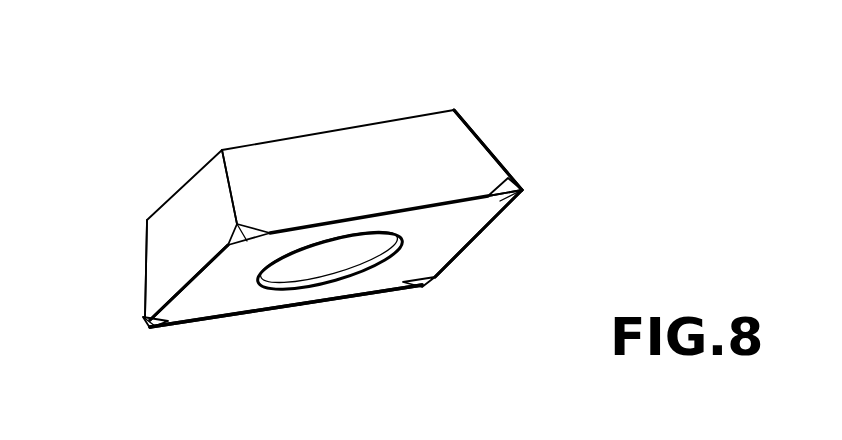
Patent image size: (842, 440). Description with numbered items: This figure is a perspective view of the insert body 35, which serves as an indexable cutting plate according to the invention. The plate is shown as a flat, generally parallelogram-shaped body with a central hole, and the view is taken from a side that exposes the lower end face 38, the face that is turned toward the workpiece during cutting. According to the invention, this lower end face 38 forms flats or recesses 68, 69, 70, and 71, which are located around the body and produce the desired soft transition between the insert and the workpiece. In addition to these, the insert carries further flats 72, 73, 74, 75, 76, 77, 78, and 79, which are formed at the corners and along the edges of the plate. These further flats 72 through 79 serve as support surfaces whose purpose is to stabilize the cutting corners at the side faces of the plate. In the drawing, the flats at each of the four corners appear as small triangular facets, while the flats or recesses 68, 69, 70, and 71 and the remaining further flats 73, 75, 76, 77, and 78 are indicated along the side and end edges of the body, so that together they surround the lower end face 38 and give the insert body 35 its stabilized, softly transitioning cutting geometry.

The insert body 35 is at (338, 100).
The flat 72 is at (238, 226).
The flat 73 is at (229, 243).
The flat 74 is at (143, 318).
The flat or recess 71 is at (153, 330).
The flat 75 is at (168, 328).
The flat or recess 68 is at (245, 242).
The flat 76 is at (402, 274).
The flat or recess 70 is at (422, 288).
The flat 77 is at (440, 285).
The lower end face 38 is at (446, 244).
The flat 79 is at (505, 190).
The flat 78 is at (527, 192).
The flat or recess 69 is at (508, 200).